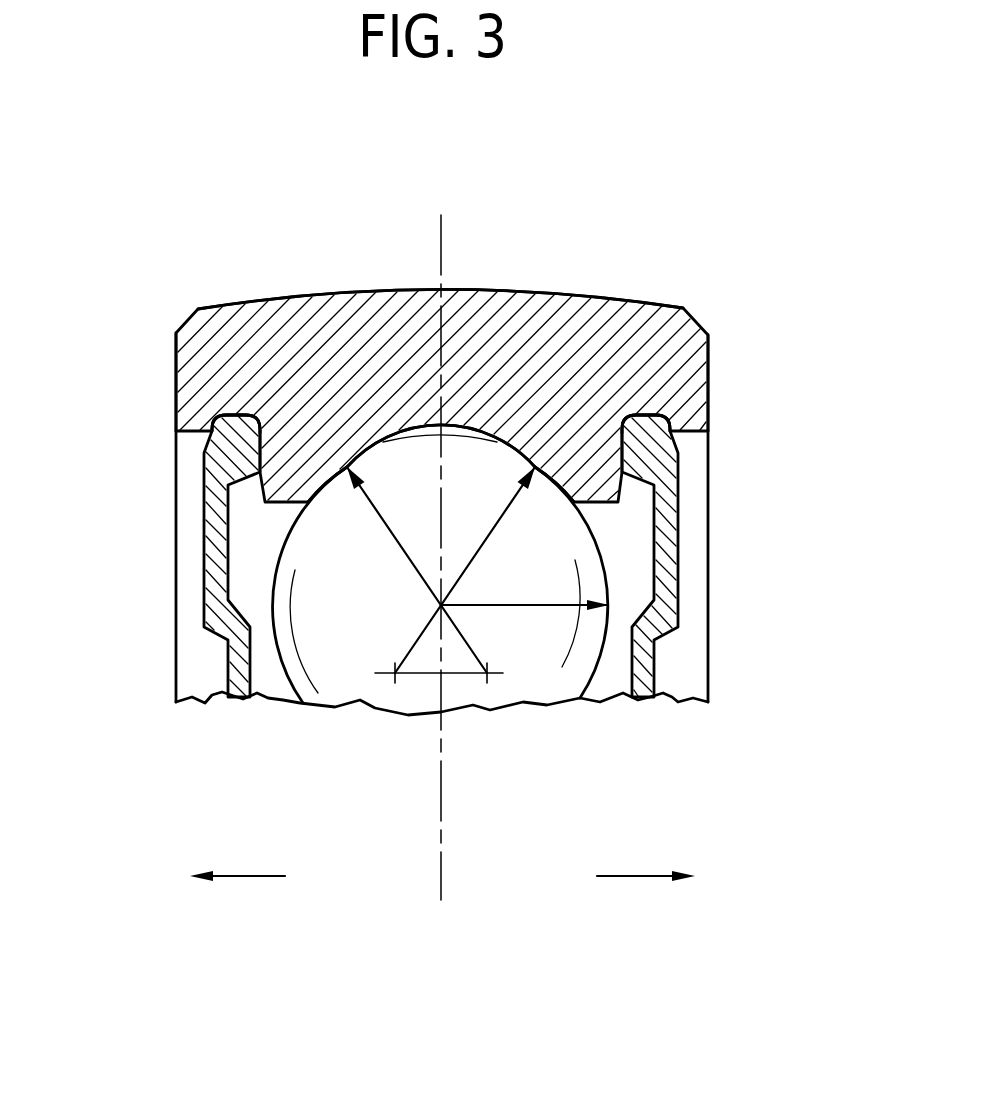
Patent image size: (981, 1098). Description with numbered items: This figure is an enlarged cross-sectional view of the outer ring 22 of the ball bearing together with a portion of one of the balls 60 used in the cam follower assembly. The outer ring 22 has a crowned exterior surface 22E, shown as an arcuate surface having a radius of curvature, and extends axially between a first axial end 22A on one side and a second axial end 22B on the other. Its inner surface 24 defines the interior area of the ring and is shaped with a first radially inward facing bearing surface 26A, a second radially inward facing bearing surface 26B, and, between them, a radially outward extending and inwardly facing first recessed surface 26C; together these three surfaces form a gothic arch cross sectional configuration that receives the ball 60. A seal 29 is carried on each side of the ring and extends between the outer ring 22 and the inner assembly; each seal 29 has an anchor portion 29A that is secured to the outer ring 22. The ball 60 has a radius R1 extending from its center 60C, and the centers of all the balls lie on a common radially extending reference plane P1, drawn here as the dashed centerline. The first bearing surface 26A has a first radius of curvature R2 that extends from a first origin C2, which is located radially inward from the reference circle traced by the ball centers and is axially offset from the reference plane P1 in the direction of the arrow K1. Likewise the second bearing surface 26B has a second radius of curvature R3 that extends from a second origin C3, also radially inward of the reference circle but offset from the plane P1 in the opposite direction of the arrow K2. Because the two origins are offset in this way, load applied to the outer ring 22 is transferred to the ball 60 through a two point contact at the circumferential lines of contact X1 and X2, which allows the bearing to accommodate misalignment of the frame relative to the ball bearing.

The outer ring 22 is at (653, 315).
The first axial end 22A is at (176, 372).
The second axial end 22B is at (710, 370).
The crowned exterior surface 22E is at (270, 297).
The inner surface 24 is at (262, 507).
The first radially inward facing bearing surface 26A is at (327, 510).
The second radially inward facing bearing surface 26B is at (553, 487).
The first recessed surface 26C is at (482, 446).
The seal 29 is at (212, 630).
The anchor portion 29A is at (204, 450).
The ball 60 is at (560, 688).
The center 60C is at (437, 607).
The radius R1 is at (527, 610).
The first radius of curvature R2 is at (395, 538).
The second radius of curvature R3 is at (493, 533).
The first origin C2 is at (484, 682).
The second origin C3 is at (388, 682).
The circumferential line of contact X1 is at (347, 467).
The circumferential line of contact X2 is at (535, 467).
The reference plane P1 is at (442, 878).
The arrow K1 is at (642, 878).
The arrow K2 is at (252, 878).